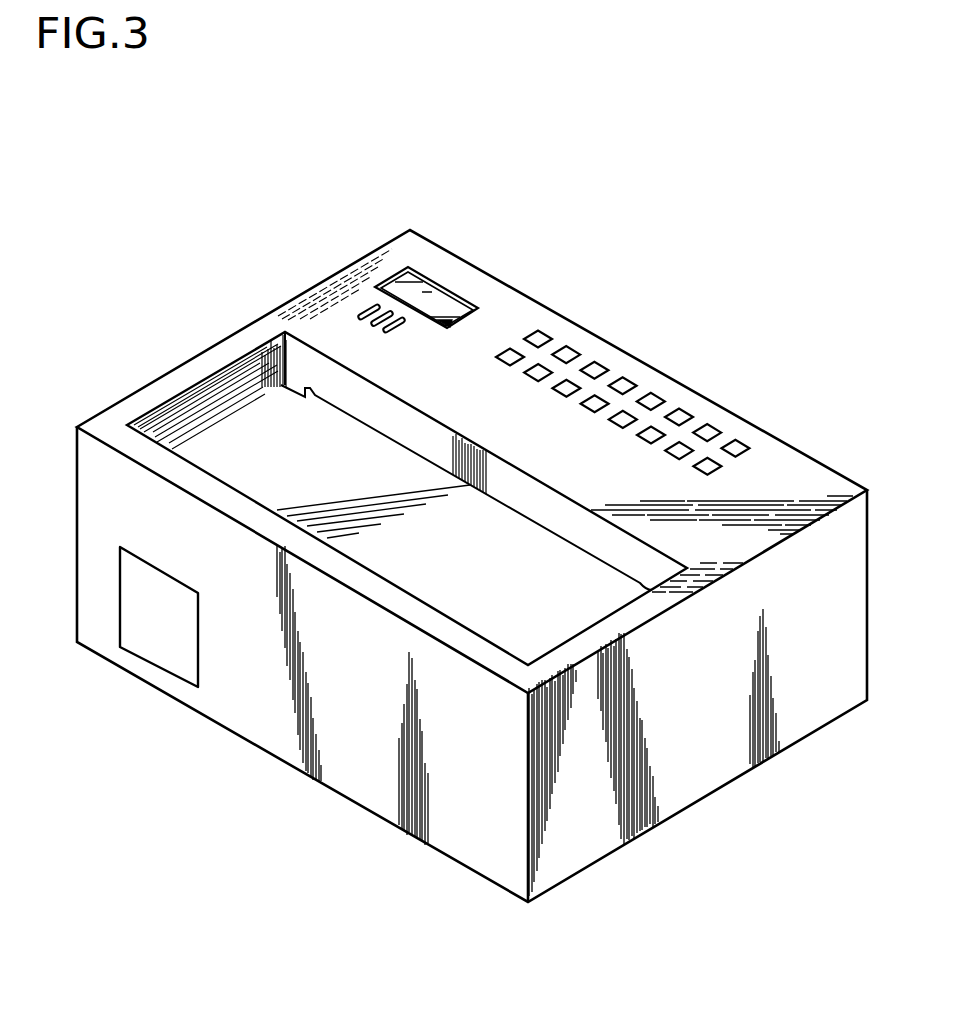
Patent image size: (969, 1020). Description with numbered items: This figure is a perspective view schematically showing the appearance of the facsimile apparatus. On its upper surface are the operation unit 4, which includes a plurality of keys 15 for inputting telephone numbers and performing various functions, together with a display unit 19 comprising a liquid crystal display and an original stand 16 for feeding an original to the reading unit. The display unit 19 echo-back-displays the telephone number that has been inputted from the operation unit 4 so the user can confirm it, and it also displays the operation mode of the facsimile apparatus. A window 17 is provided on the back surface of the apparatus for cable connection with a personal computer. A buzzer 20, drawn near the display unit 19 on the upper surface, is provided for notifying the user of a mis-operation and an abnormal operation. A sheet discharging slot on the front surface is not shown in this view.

The operation unit 4 is at (645, 375).
The keys 15 is at (545, 333).
The original stand 16 is at (236, 418).
The window 17 is at (147, 643).
The display unit 19 is at (443, 285).
The buzzer 20 is at (367, 306).